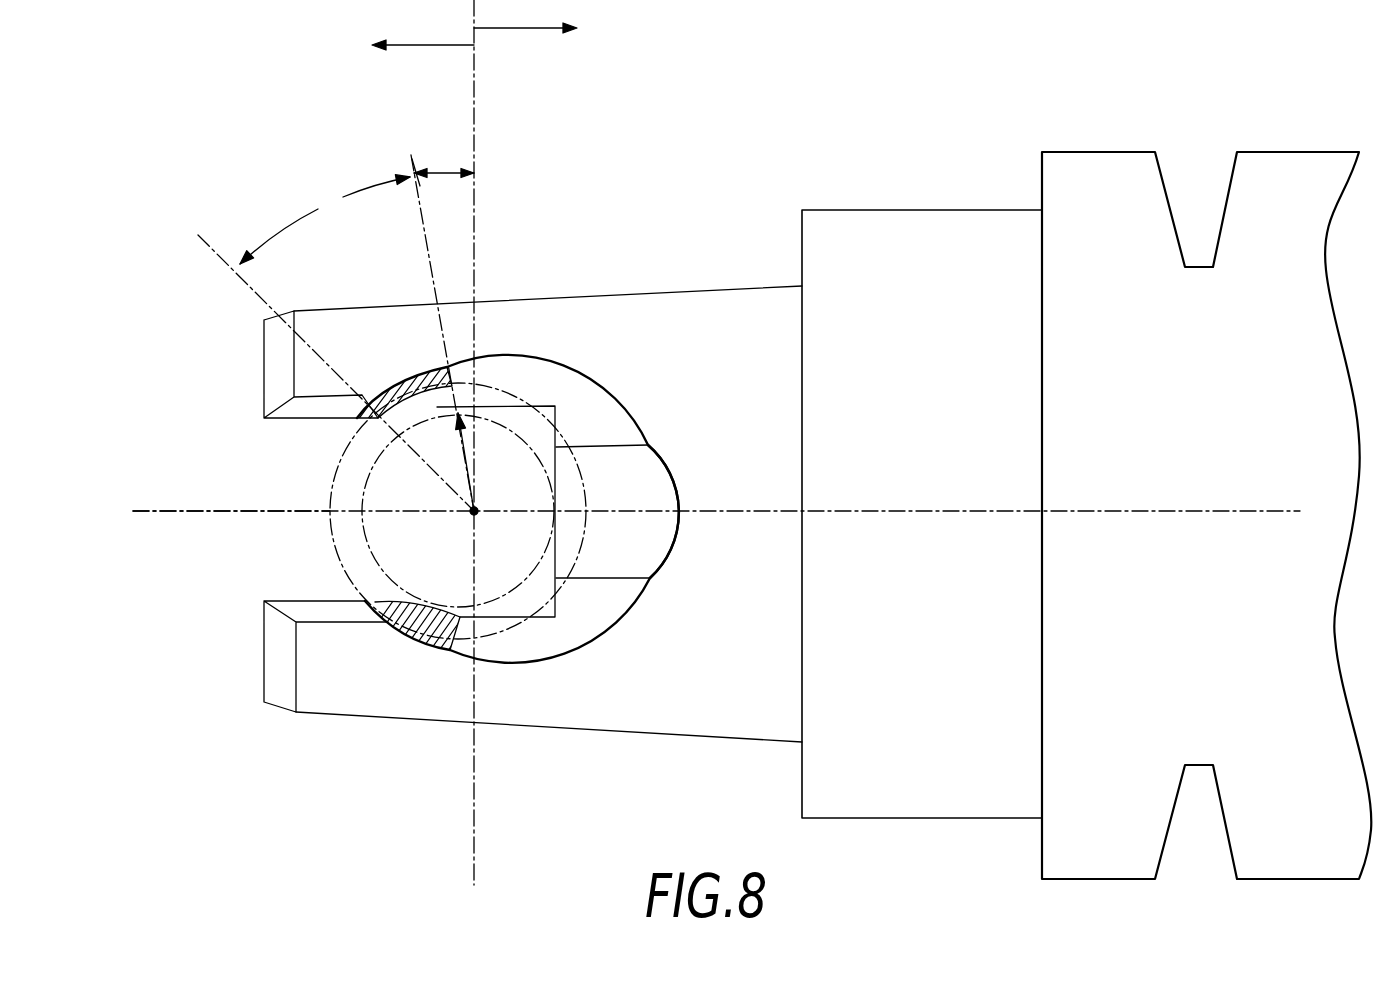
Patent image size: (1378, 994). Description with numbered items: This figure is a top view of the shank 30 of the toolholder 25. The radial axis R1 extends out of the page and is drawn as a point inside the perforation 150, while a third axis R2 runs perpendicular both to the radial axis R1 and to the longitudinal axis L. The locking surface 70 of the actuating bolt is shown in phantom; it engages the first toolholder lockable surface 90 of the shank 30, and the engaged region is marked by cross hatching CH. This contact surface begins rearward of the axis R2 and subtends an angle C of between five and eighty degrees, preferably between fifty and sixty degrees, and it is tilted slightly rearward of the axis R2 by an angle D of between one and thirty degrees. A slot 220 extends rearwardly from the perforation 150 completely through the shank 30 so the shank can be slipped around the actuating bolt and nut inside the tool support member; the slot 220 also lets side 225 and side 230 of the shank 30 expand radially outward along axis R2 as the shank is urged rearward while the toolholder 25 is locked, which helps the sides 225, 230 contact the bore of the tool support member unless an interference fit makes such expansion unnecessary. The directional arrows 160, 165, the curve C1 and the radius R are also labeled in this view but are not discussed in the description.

The toolholder 25 is at (1086, 163).
The shank 30 is at (445, 692).
The locking surface 70 is at (350, 457).
The first toolholder lockable surface 90 is at (373, 602).
The perforation 150 is at (556, 420).
The direction toward hub 160 is at (548, 28).
The direction away from hub 165 is at (400, 47).
The slot 220 is at (273, 530).
The side 225 is at (268, 367).
The side 230 is at (264, 660).
The angle C is at (336, 343).
The curve C1 is at (650, 482).
The cross hatching CH is at (412, 378).
The angle D is at (447, 172).
The longitudinal axis L is at (163, 508).
The radius R is at (462, 450).
The radial axis R1 is at (478, 515).
The third axis R2 is at (474, 192).